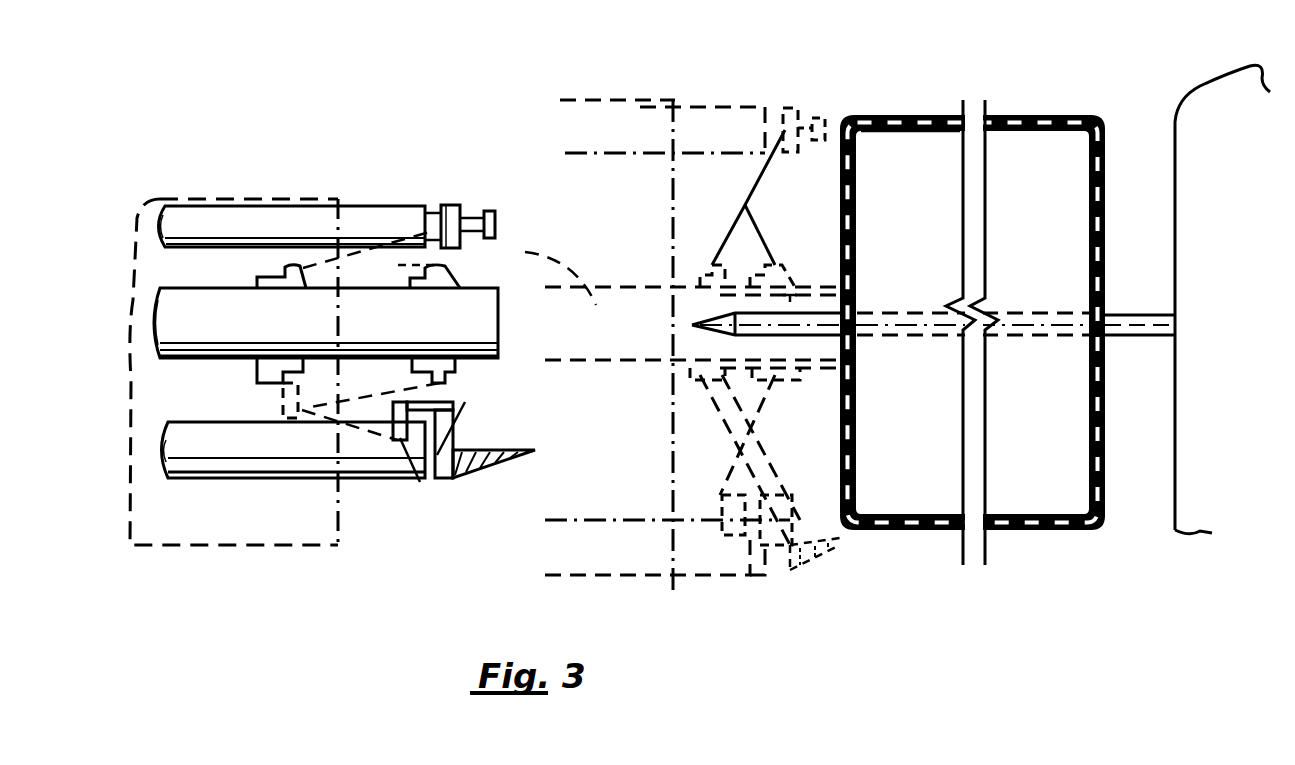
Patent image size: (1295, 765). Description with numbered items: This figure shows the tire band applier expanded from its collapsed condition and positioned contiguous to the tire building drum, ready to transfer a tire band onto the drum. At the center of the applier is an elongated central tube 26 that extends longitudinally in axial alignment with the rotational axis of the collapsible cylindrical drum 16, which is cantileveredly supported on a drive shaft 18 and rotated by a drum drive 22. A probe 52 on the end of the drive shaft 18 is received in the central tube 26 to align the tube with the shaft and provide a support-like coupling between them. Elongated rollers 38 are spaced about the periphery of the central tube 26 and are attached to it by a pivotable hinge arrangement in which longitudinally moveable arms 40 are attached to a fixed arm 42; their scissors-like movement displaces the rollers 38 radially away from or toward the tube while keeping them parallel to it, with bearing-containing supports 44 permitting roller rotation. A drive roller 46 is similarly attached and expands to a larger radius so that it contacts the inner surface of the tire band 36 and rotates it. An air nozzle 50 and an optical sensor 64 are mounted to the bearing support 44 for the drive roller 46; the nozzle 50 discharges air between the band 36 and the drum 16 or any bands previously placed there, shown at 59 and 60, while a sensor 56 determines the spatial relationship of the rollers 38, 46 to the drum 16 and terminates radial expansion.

The cylindrical drum 16 is at (1032, 142).
The drive shaft 18 is at (1129, 314).
The drum drive 22 is at (1175, 216).
The central tube 26 is at (480, 298).
The tire band 36 is at (608, 100).
The rollers 38 is at (352, 212).
The moveable arms 40 is at (332, 290).
The fixed arm 42 is at (408, 278).
The bearing-containing supports 44 is at (440, 213).
The drive roller 46 is at (197, 468).
The air nozzle 50 is at (493, 456).
The probe 52 is at (700, 316).
The sensor 56 is at (491, 213).
The previously placed band 59 is at (893, 116).
The previously placed band 60 is at (906, 136).
The optical sensor 64 is at (415, 460).